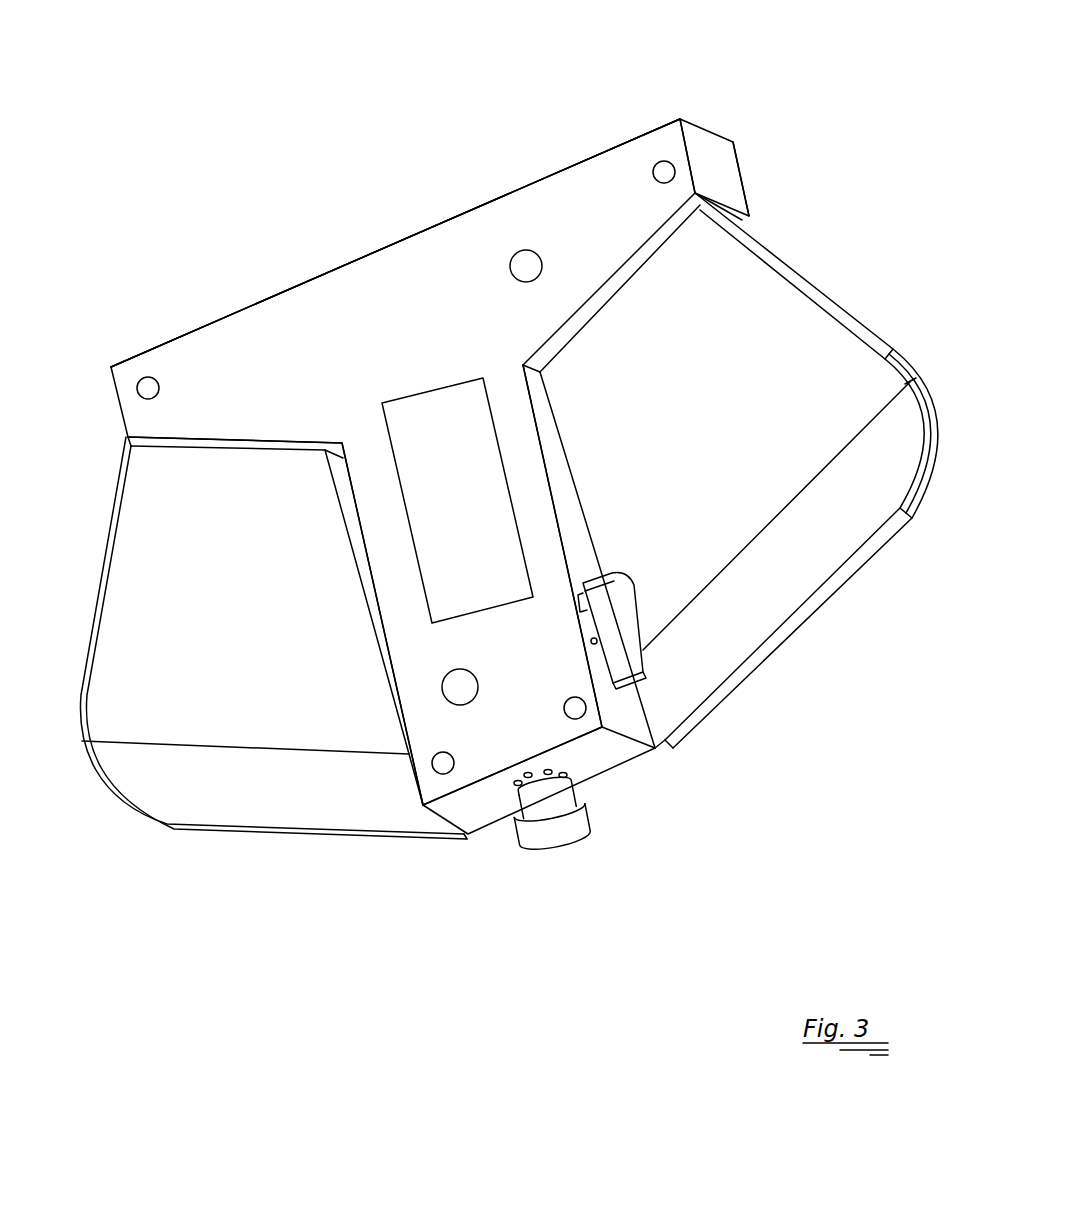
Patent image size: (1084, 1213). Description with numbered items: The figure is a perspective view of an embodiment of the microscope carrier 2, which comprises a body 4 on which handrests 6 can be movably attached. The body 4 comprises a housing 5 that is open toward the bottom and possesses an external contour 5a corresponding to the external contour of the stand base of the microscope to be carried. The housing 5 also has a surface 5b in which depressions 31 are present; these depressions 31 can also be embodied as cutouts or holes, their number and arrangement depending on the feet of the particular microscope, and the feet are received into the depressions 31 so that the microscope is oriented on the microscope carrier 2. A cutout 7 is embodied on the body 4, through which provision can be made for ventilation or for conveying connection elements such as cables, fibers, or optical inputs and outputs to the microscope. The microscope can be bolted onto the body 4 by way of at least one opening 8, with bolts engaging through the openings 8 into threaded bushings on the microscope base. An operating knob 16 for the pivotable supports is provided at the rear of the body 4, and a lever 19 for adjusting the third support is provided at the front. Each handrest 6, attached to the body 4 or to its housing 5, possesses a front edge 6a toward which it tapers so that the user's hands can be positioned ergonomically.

The microscope carrier 2 is at (403, 196).
The body 4 is at (421, 299).
The housing 5 is at (732, 172).
The external contour 5a is at (447, 212).
The surface 5b is at (317, 294).
The handrest 6 is at (734, 402).
The front edge 6a is at (872, 555).
The cutout 7 is at (476, 542).
The opening 8 is at (538, 276).
The operating knob 16 is at (575, 838).
The lever 19 is at (627, 598).
The depression 31 is at (160, 388).